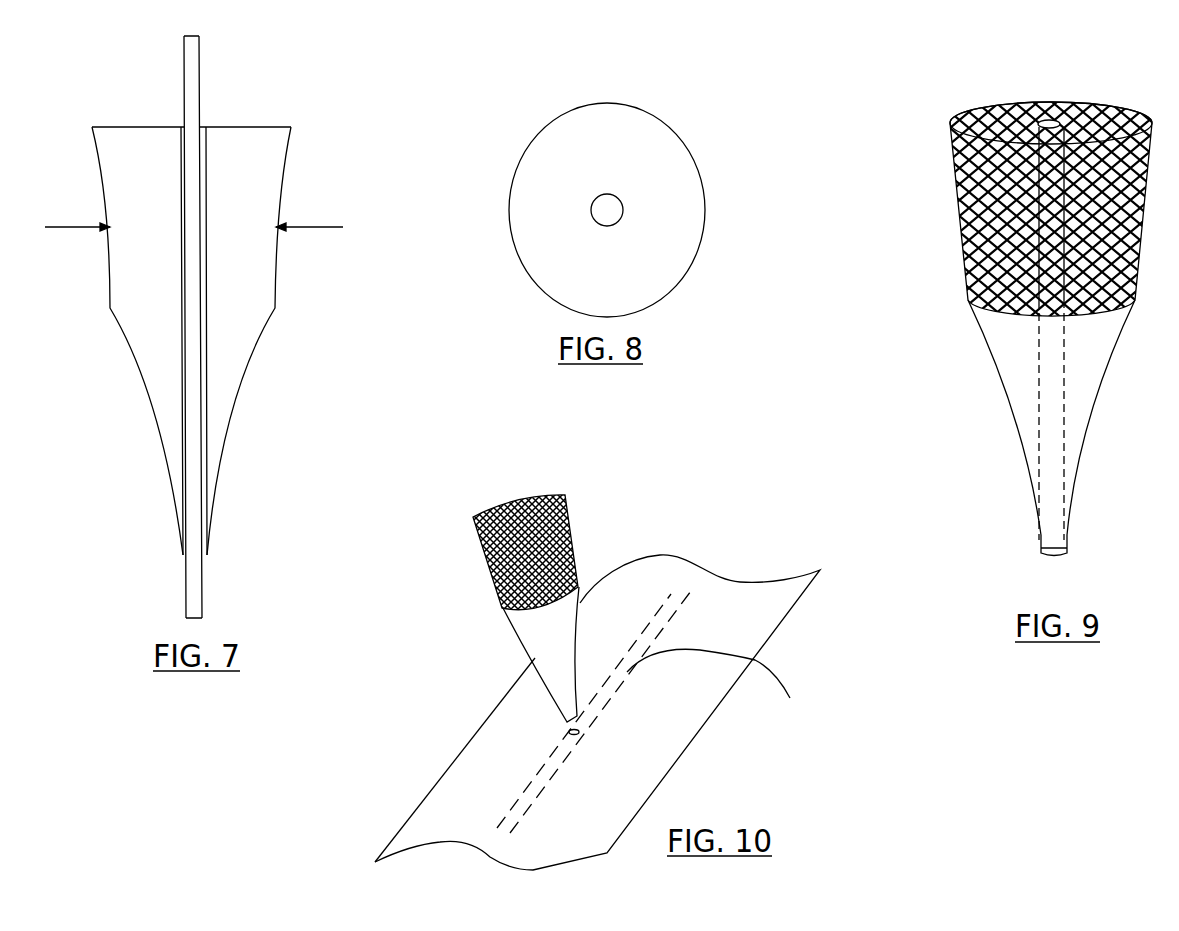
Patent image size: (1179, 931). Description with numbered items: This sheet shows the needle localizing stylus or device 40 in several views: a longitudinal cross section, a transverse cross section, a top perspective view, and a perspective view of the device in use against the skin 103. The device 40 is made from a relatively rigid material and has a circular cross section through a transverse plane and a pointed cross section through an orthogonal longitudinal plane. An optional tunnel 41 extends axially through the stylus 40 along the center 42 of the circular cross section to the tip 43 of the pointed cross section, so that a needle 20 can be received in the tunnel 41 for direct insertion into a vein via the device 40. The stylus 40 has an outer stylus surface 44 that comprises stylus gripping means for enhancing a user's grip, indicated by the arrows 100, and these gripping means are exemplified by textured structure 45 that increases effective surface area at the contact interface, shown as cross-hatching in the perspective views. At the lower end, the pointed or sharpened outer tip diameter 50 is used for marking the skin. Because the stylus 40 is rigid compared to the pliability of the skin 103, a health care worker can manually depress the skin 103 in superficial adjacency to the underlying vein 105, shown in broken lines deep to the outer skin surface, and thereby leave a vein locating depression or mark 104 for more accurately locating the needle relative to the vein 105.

In FIG. 7, the guide wire 20 is at (193, 79).
In FIG. 7, the needle localizing stylus 40 is at (233, 423).
In FIG. 9, the needle localizing stylus 40 is at (953, 253).
In FIG. 10, the needle localizing stylus 40 is at (473, 520).
In FIG. 7, the tunnel 41 is at (182, 382).
In FIG. 8, the tunnel 41 is at (592, 213).
In FIG. 9, the tunnel 41 is at (1038, 367).
In FIG. 7, the center 42 is at (181, 125).
In FIG. 8, the center 42 is at (608, 207).
In FIG. 10, the center 42 is at (512, 497).
In FIG. 7, the tip 43 is at (182, 567).
In FIG. 9, the tip 43 is at (1053, 562).
In FIG. 7, the outer stylus surface 44 is at (276, 308).
In FIG. 8, the outer stylus surface 44 is at (695, 157).
In FIG. 7, the textured structure 45 is at (286, 155).
In FIG. 9, the textured structure 45 is at (973, 222).
In FIG. 10, the textured structure 45 is at (566, 525).
In FIG. 7, the pointed outer tip diameter 50 is at (213, 562).
In FIG. 8, the pointed outer tip diameter 50 is at (607, 192).
In FIG. 9, the pointed outer tip diameter 50 is at (1041, 554).
In FIG. 10, the pointed outer tip diameter 50 is at (566, 721).
In FIG. 7, the arrows indicating user grip 100 is at (72, 223).
In FIG. 10, the skin 103 is at (745, 597).
In FIG. 10, the vein locating mark 104 is at (570, 731).
In FIG. 10, the vein 105 is at (733, 683).